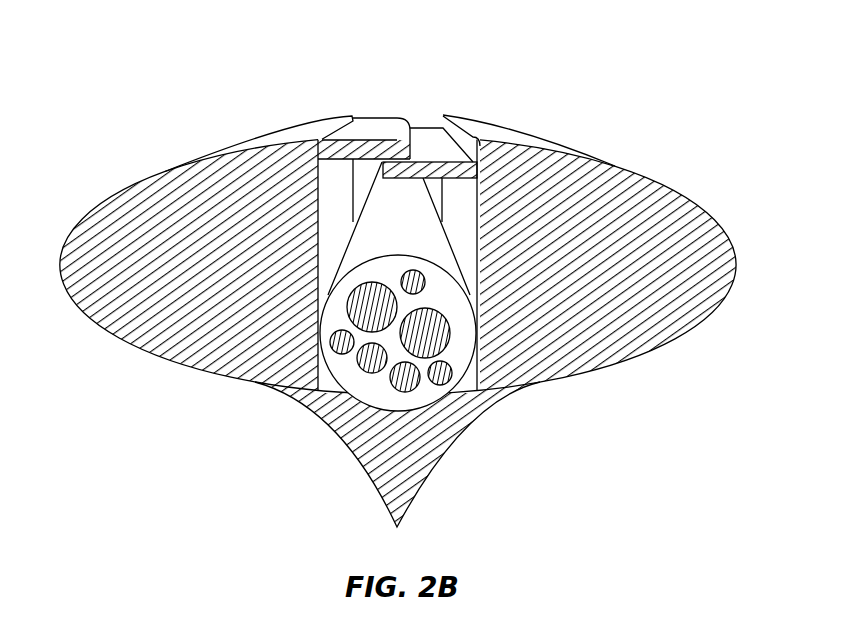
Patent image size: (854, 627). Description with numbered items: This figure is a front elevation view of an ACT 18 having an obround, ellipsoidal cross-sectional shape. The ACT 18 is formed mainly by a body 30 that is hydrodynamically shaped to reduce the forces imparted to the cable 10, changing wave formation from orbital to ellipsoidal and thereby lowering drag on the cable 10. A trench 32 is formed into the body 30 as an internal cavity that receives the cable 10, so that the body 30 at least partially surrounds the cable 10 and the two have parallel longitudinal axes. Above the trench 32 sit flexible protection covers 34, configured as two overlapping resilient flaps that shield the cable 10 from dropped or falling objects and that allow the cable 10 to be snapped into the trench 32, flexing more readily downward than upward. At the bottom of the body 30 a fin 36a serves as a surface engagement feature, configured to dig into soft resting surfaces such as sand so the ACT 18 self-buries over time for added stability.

The ACT 18 is at (427, 313).
The body 30 is at (630, 165).
The trench 32 is at (360, 175).
The flexible protection cover 34 is at (328, 195).
The cable 10 is at (462, 335).
The fin 36a is at (433, 458).